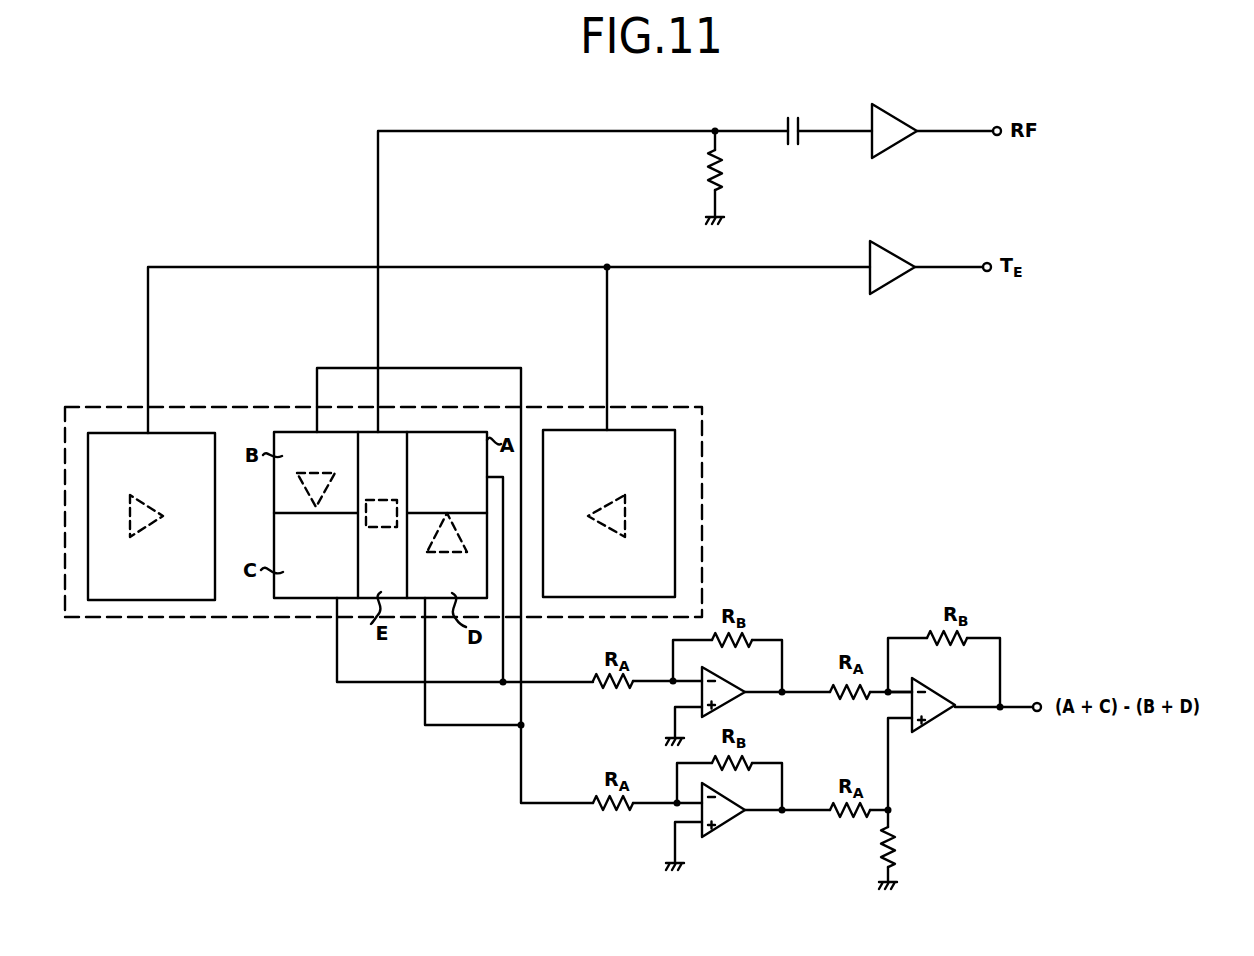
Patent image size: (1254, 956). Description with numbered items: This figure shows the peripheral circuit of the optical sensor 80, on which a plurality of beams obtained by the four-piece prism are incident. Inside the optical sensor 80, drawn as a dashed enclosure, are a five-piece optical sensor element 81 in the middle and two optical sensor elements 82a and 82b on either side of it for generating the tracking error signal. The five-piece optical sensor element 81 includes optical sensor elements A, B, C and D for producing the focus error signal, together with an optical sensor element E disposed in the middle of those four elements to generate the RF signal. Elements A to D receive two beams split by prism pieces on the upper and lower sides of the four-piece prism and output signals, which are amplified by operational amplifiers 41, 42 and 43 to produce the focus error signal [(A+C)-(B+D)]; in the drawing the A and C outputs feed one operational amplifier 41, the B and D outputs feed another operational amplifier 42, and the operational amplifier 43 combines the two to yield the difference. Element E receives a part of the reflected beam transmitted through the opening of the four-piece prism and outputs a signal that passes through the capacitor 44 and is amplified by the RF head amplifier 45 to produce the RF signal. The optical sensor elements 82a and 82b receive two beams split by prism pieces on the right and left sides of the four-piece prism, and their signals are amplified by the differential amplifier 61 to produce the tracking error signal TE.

The capacitor 44 is at (794, 117).
The RF head amplifier 45 is at (905, 121).
The differential amplifier 61 is at (905, 263).
The optical sensor 80 is at (705, 420).
The five-piece optical sensor element 81 is at (290, 427).
The optical sensor element 82a is at (665, 500).
The optical sensor element 82b is at (119, 594).
The operational amplifier 41 is at (744, 702).
The operational amplifier 42 is at (744, 820).
The operational amplifier 43 is at (950, 724).